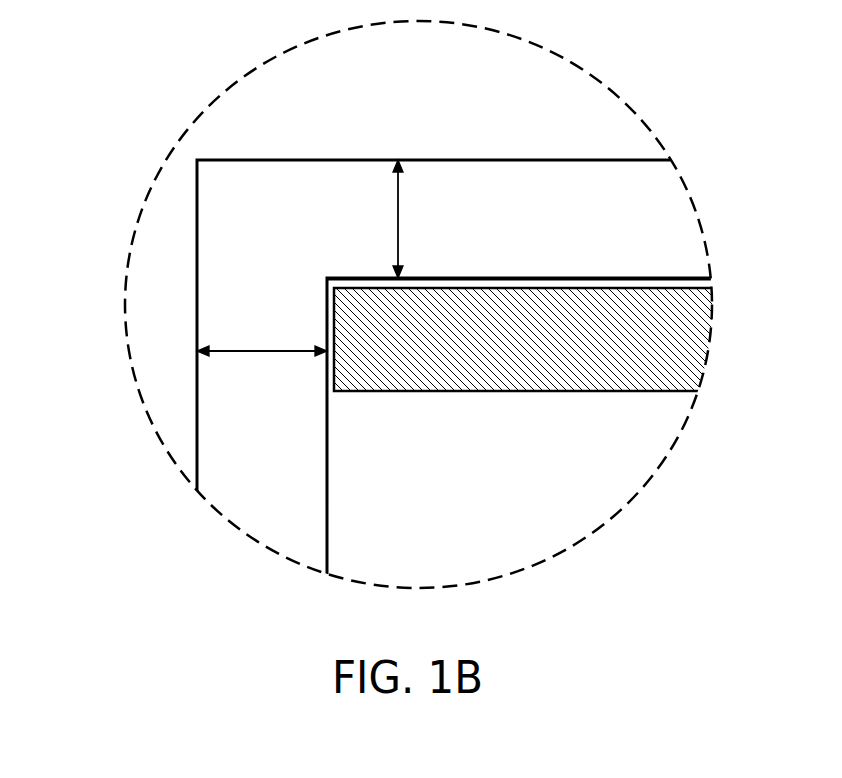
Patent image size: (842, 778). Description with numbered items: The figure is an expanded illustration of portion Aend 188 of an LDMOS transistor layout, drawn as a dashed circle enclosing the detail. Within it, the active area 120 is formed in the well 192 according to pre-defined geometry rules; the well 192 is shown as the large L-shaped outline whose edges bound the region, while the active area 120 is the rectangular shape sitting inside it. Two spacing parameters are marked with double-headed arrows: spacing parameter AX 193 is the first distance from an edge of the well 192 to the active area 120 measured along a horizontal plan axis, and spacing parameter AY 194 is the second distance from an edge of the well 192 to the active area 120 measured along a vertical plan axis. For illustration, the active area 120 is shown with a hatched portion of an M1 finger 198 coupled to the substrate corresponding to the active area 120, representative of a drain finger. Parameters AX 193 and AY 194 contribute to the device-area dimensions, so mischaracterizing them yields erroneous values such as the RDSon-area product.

The active area 120 is at (613, 278).
The portion Aend 188 is at (693, 408).
The well 192 is at (252, 160).
The spacing parameter AX 193 is at (278, 352).
The spacing parameter AY 194 is at (400, 211).
The M1 finger 198 is at (503, 356).